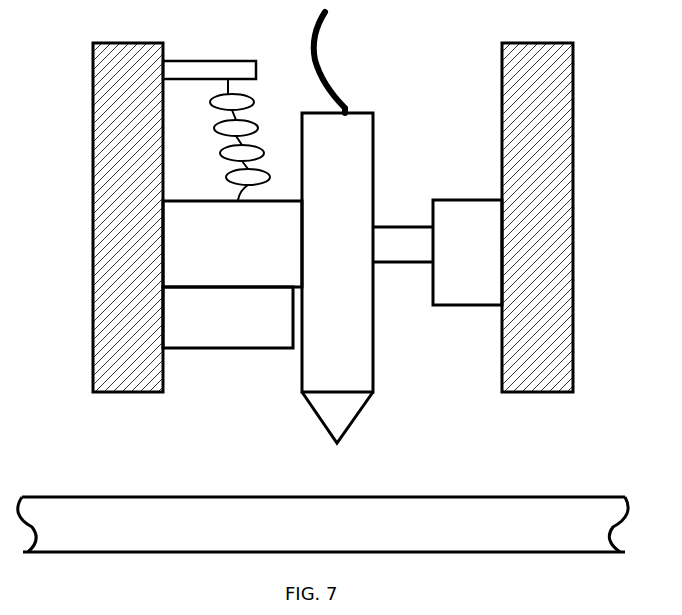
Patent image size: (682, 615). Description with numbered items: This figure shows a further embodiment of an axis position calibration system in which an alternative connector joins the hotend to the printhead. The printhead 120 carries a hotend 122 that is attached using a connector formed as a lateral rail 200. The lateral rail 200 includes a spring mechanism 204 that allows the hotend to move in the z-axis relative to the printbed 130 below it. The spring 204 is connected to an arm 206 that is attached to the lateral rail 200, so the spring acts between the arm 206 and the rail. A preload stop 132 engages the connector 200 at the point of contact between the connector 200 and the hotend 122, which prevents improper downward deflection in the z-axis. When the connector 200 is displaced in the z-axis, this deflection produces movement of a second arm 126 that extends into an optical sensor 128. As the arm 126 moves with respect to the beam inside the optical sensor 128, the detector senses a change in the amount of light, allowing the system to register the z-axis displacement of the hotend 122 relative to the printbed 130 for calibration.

The printhead 120 is at (93, 321).
The hotend 122 is at (373, 148).
The arm 126 is at (403, 262).
The optical sensor 128 is at (446, 200).
The printbed 130 is at (583, 496).
The preload stop 132 is at (193, 349).
The lateral rail 200 is at (194, 200).
The spring mechanism 204 is at (255, 96).
The arm 206 is at (187, 61).